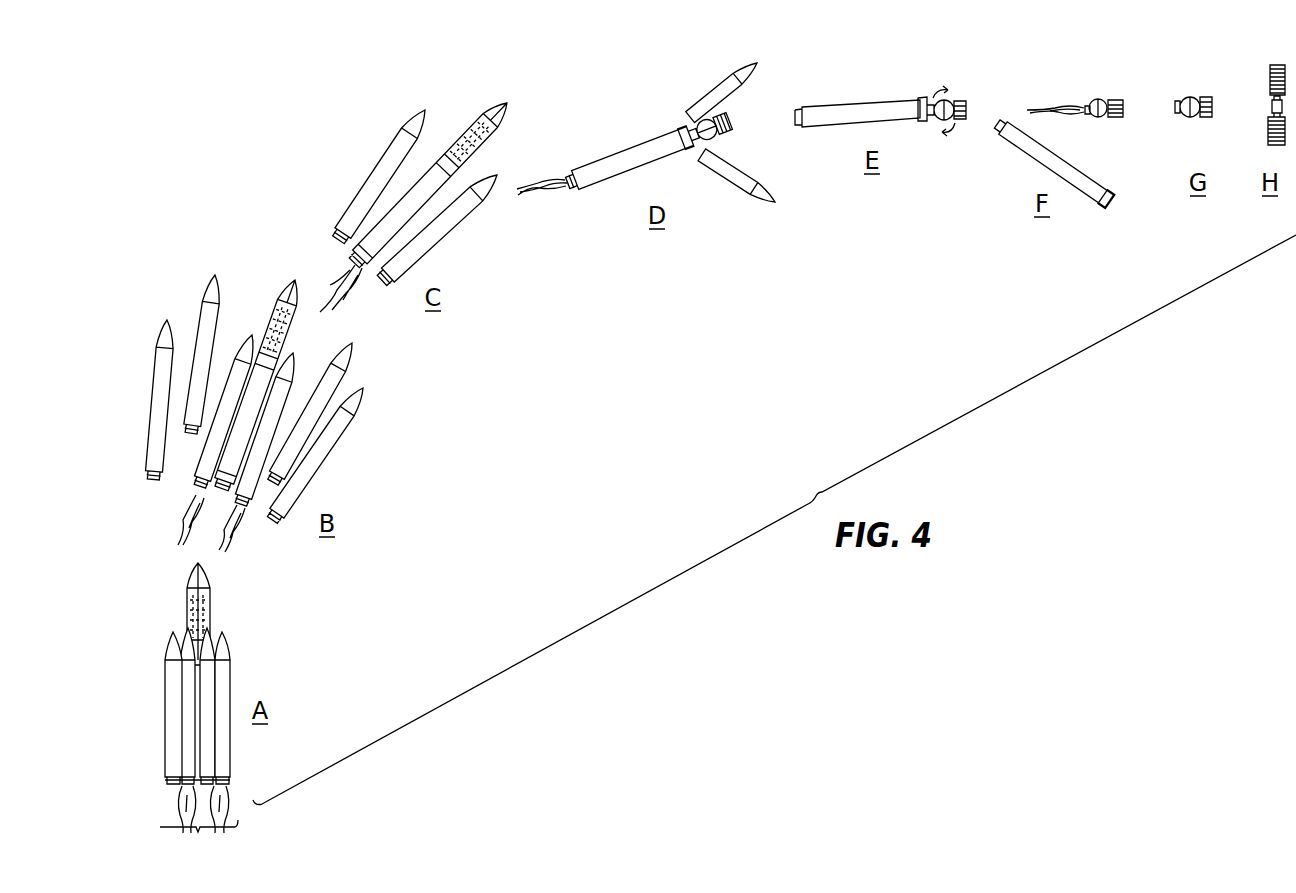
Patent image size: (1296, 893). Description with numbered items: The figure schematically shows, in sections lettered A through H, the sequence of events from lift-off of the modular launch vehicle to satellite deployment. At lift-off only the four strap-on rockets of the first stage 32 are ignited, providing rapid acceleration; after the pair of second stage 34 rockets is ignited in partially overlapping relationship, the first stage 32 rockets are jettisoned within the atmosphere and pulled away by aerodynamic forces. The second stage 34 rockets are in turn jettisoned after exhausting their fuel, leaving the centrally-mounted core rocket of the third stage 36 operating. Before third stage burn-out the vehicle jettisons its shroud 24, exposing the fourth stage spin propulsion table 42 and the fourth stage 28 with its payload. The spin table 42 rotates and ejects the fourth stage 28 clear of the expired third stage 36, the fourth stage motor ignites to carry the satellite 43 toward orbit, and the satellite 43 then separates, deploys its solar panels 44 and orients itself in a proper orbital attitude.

The shroud 24 is at (702, 95).
The fourth stage 28 is at (717, 142).
The first stage 32 is at (160, 827).
The second stage 34 is at (377, 177).
The third stage 36 is at (427, 181).
The fourth stage spin propulsion table 42 is at (932, 100).
The satellite 43 is at (732, 122).
The solar panels 44 is at (1268, 78).